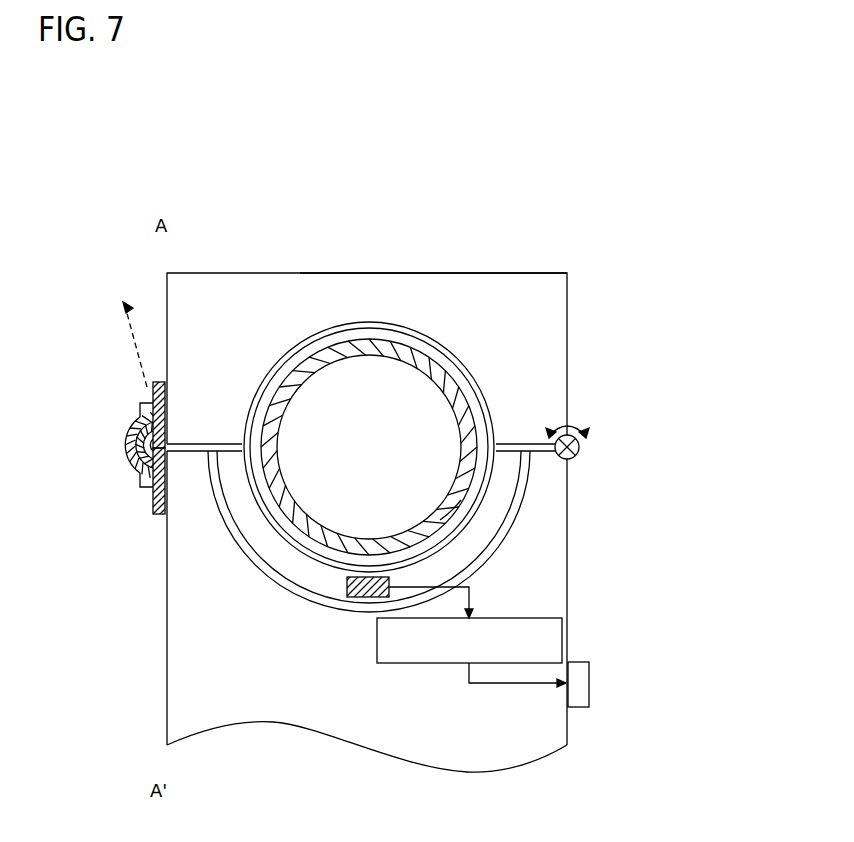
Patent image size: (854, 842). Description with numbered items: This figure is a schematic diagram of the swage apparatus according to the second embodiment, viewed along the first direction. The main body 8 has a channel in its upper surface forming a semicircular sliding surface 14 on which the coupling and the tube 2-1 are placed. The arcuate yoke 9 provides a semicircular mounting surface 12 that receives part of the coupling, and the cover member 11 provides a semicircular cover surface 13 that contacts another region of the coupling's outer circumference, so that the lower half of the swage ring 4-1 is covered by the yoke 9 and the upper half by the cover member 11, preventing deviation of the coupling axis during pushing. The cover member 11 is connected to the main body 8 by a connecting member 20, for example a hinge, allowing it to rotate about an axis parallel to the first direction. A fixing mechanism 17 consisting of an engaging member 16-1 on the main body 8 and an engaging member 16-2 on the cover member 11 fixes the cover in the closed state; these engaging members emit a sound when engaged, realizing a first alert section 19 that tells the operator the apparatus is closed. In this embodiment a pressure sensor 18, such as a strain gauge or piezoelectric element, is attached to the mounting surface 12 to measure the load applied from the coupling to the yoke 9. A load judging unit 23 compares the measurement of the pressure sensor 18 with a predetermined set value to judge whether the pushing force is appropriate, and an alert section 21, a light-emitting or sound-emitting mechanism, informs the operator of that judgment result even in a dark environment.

The tube 2-1 is at (412, 362).
The swage ring 4-1 is at (333, 340).
The main body 8 is at (558, 596).
The yoke 9 is at (508, 485).
The cover member 11 is at (558, 339).
The mounting surface 12 is at (458, 512).
The cover surface 13 is at (386, 328).
The sliding surface 14 is at (266, 558).
The engaging member 16-1 is at (119, 483).
The engaging member 16-2 is at (156, 397).
The fixing mechanism 17 is at (101, 448).
The pressure sensor 18 is at (346, 590).
The first alert section 19 is at (101, 400).
The connecting member 20 is at (575, 448).
The alert section 21 is at (583, 692).
The load judging unit 23 is at (502, 618).